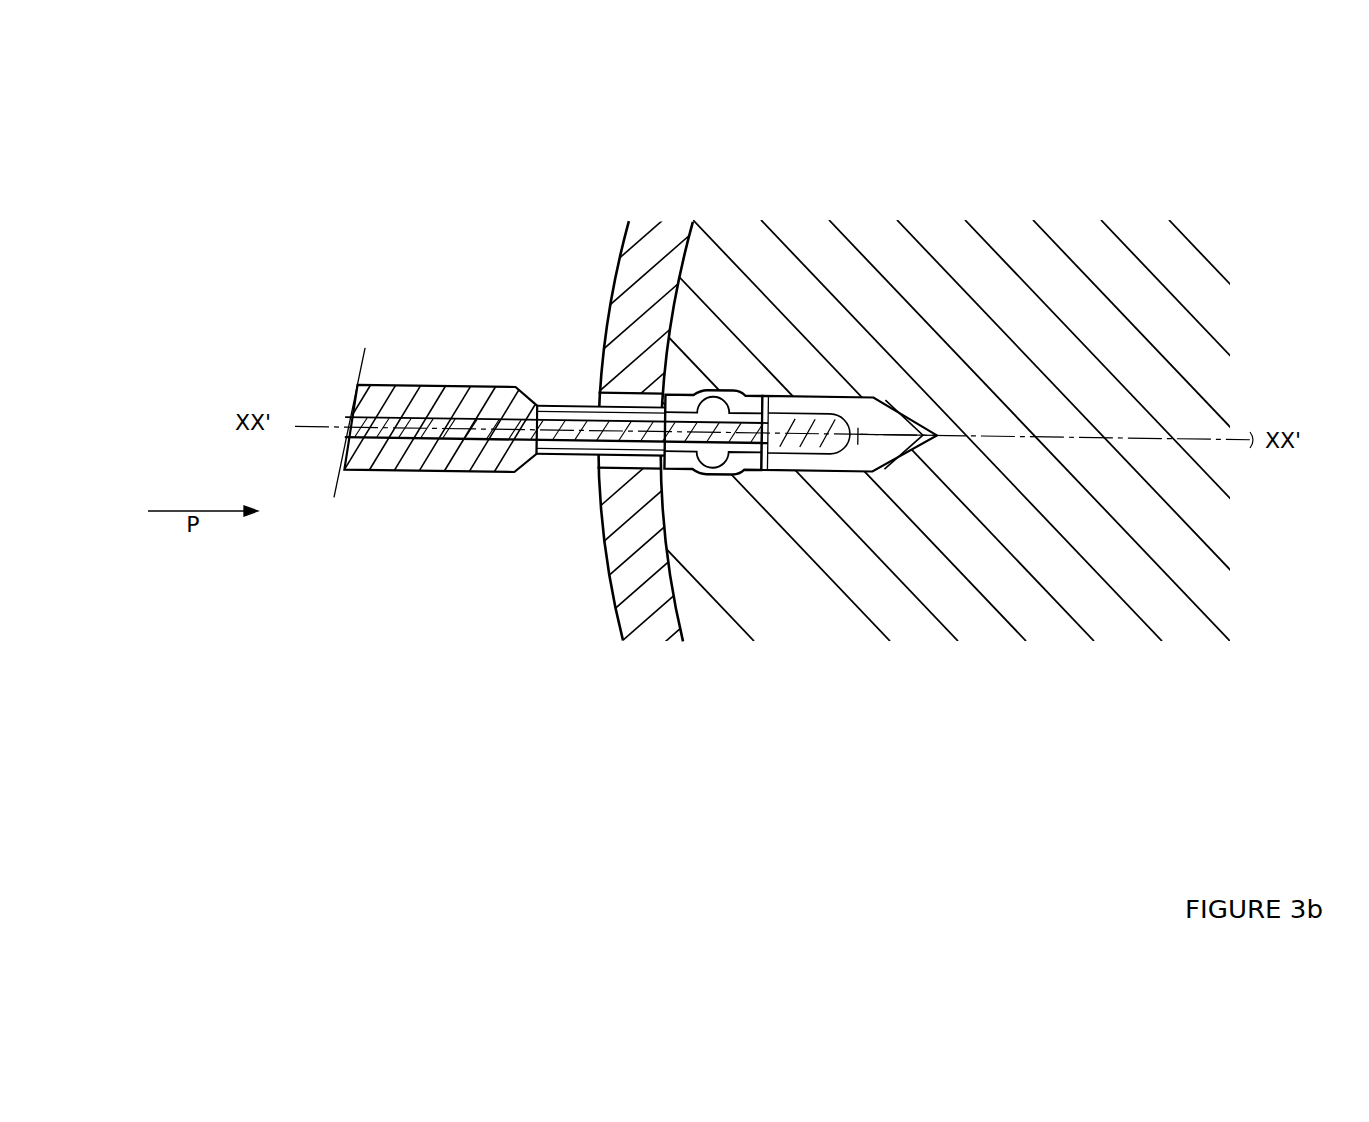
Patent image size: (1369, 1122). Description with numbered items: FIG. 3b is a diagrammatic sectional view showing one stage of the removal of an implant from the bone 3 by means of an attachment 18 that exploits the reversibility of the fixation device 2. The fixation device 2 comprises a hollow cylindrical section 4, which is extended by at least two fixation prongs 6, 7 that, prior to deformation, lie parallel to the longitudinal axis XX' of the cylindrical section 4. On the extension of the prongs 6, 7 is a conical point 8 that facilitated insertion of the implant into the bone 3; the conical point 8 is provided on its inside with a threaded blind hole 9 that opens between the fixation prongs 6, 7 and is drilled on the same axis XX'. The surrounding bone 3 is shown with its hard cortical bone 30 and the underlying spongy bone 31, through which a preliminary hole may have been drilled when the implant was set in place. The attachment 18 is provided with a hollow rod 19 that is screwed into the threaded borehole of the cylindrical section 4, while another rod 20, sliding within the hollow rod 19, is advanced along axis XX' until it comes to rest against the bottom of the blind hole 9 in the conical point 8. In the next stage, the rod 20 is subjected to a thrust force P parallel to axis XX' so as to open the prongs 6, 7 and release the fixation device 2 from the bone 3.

The fixation device 2 is at (644, 439).
The bone 3 is at (861, 394).
The hollow cylindrical section 4 is at (598, 388).
The fixation prong 6 is at (745, 397).
The fixation prong 7 is at (682, 485).
The conical point 8 is at (882, 425).
The threaded blind hole 9 is at (825, 408).
The attachment 18 is at (784, 422).
The hollow rod 19 is at (403, 395).
The rod 20 is at (387, 418).
The cortical bone 30 is at (660, 245).
The spongy bone 31 is at (1107, 550).